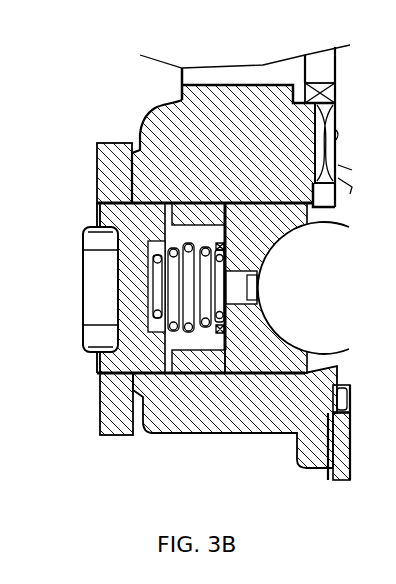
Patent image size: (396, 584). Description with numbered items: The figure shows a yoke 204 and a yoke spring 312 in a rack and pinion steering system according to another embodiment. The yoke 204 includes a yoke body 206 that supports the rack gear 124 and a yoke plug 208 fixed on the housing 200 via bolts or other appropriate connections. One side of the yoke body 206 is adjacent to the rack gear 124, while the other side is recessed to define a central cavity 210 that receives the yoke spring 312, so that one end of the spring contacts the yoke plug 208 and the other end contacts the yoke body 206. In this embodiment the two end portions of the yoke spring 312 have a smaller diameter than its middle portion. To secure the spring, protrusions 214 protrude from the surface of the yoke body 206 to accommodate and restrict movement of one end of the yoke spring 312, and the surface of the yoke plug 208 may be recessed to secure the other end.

The housing 200 is at (167, 107).
The yoke 204 is at (207, 373).
The yoke body 206 is at (244, 360).
The yoke plug 208 is at (100, 205).
The central cavity 210 is at (197, 233).
The protrusions 214 is at (227, 203).
The yoke spring 312 is at (147, 275).
The rack gear 124 is at (332, 304).